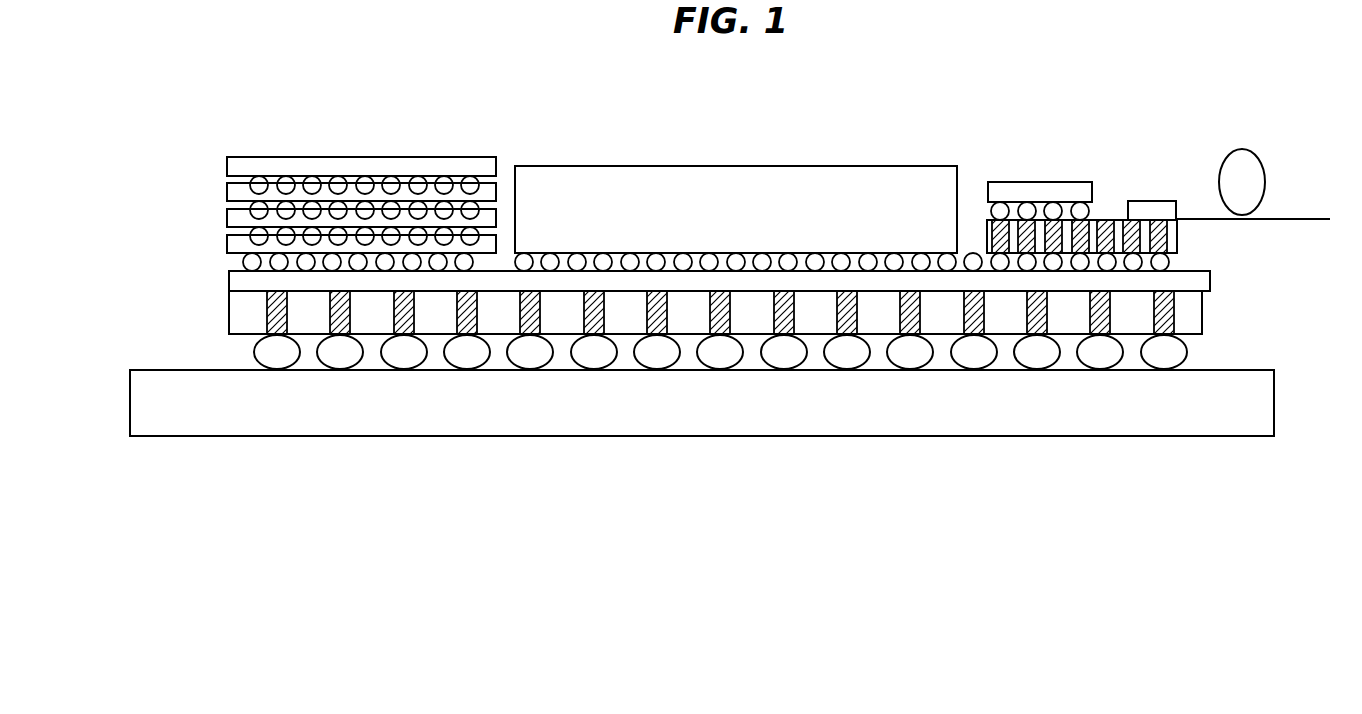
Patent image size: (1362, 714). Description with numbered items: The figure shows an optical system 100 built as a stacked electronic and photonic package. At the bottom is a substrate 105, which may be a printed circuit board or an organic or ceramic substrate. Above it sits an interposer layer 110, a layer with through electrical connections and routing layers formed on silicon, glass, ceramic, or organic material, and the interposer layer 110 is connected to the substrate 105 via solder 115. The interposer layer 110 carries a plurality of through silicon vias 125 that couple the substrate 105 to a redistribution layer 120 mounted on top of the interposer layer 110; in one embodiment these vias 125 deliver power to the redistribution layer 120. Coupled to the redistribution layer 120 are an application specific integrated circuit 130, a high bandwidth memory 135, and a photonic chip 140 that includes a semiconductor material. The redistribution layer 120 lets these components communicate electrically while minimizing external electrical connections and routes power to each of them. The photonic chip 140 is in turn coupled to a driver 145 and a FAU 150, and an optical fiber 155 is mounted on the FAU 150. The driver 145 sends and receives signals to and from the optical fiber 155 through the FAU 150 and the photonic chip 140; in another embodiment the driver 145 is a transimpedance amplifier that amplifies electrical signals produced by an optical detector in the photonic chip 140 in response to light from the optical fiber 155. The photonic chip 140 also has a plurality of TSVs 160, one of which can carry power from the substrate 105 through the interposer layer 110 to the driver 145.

The optical system 100 is at (957, 492).
The substrate 105 is at (742, 417).
The interposer layer 110 is at (185, 310).
The solder 115 is at (225, 263).
The redistribution layer (RDL) 120 is at (218, 280).
The through silicon vias (TSVs) 125 is at (1187, 318).
The application specific integrated circuit (ASIC) 130 is at (857, 226).
The high bandwidth memory (HBM) 135 is at (347, 130).
The photonic chip 140 is at (1187, 235).
The driver 145 is at (1045, 173).
The FAU 150 is at (1147, 195).
The optical fiber 155 is at (1265, 157).
The TSVs 160 is at (984, 232).